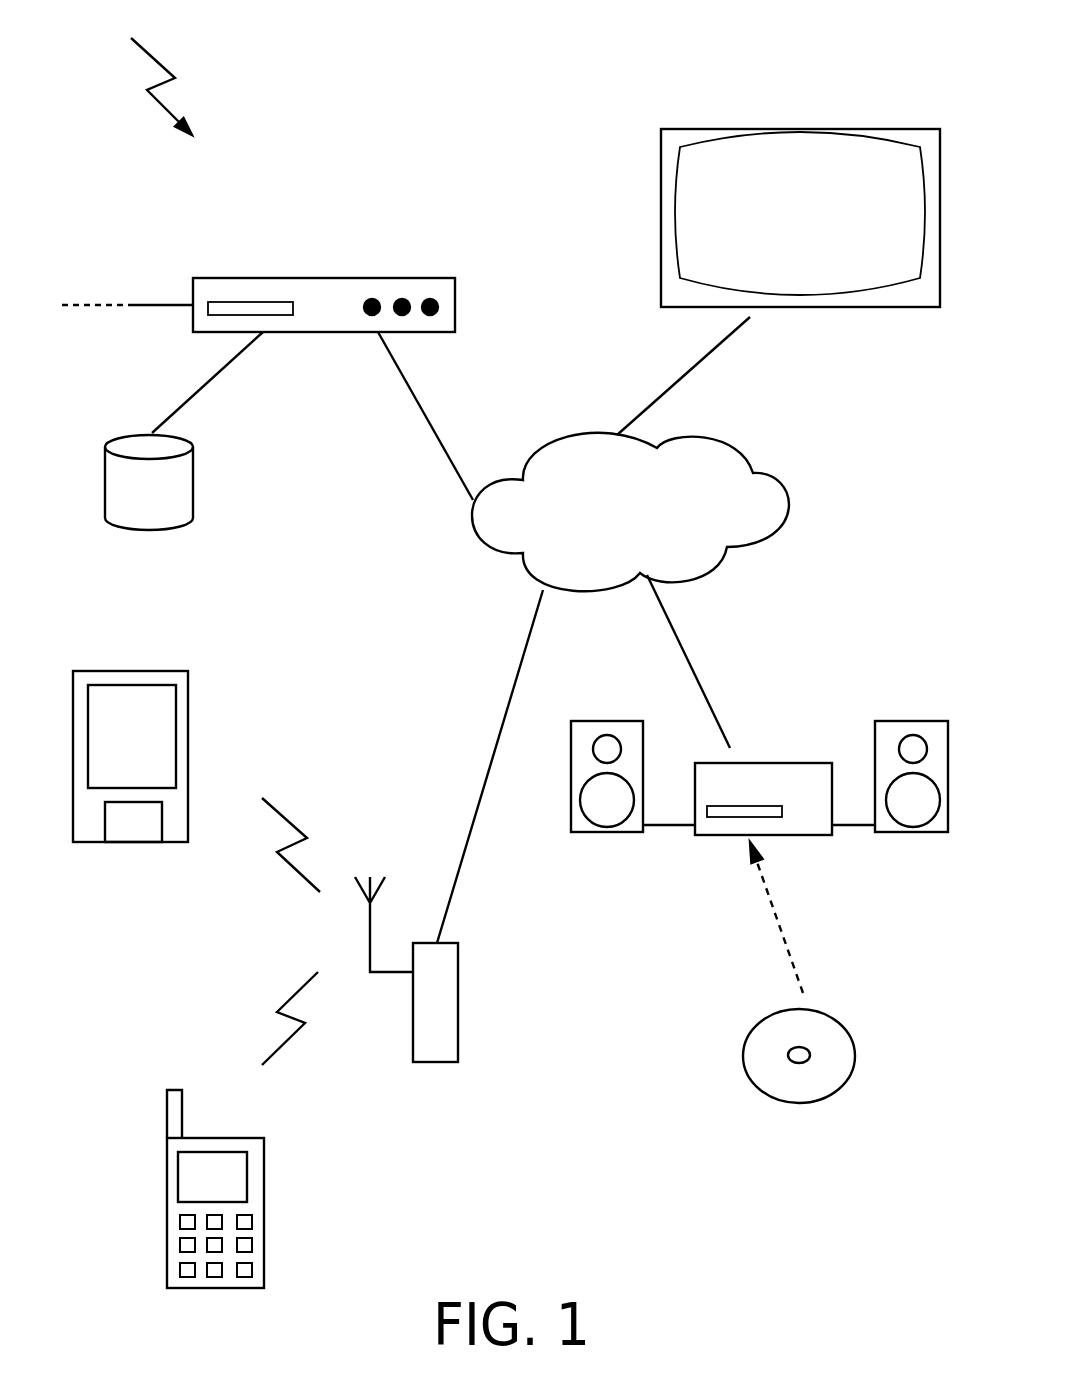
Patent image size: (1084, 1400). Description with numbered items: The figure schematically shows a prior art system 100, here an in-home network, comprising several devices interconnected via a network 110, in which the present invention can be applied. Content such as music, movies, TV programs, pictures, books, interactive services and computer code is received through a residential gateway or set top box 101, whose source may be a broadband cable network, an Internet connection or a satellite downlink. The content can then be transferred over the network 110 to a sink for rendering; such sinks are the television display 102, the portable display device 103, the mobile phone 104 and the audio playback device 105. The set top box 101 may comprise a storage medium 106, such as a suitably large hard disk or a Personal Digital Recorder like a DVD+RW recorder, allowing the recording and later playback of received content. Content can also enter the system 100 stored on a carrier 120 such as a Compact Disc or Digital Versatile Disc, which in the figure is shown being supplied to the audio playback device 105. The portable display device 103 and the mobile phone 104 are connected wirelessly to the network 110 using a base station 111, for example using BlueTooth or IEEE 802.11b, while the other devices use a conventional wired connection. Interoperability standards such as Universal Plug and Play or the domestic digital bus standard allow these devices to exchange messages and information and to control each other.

The system 100 is at (161, 69).
The set top box 101 is at (322, 277).
The television display 102 is at (880, 132).
The portable display device 103 is at (100, 668).
The mobile phone 104 is at (187, 1288).
The audio playback device 105 is at (703, 837).
The storage medium 106 is at (149, 482).
The network 110 is at (588, 432).
The base station 111 is at (430, 1070).
The carrier 120 is at (775, 1008).